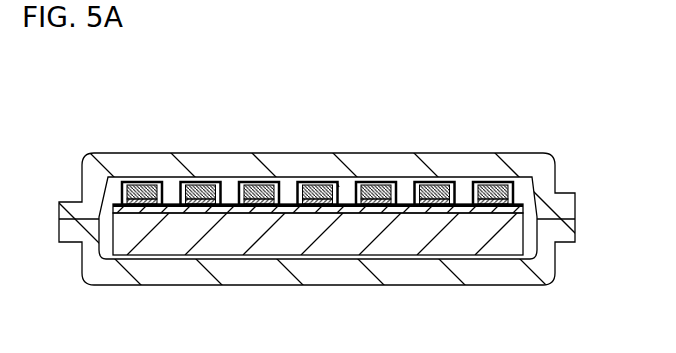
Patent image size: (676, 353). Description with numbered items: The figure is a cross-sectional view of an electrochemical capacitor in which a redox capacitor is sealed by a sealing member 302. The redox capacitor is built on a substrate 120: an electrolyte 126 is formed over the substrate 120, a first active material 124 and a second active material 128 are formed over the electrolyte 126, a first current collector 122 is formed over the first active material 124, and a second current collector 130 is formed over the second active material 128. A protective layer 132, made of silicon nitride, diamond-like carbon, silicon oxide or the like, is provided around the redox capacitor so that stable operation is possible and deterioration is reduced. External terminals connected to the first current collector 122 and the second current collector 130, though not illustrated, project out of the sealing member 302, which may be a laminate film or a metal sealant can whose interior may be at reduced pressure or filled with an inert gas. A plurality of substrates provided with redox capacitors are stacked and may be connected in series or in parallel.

The substrate 120 is at (270, 232).
The first current collector 122 is at (158, 186).
The first active material 124 is at (148, 200).
The electrolyte 126 is at (286, 207).
The second active material 128 is at (207, 204).
The second current collector 130 is at (217, 182).
The protective layer 132 is at (337, 185).
The sealing member 302 is at (462, 165).